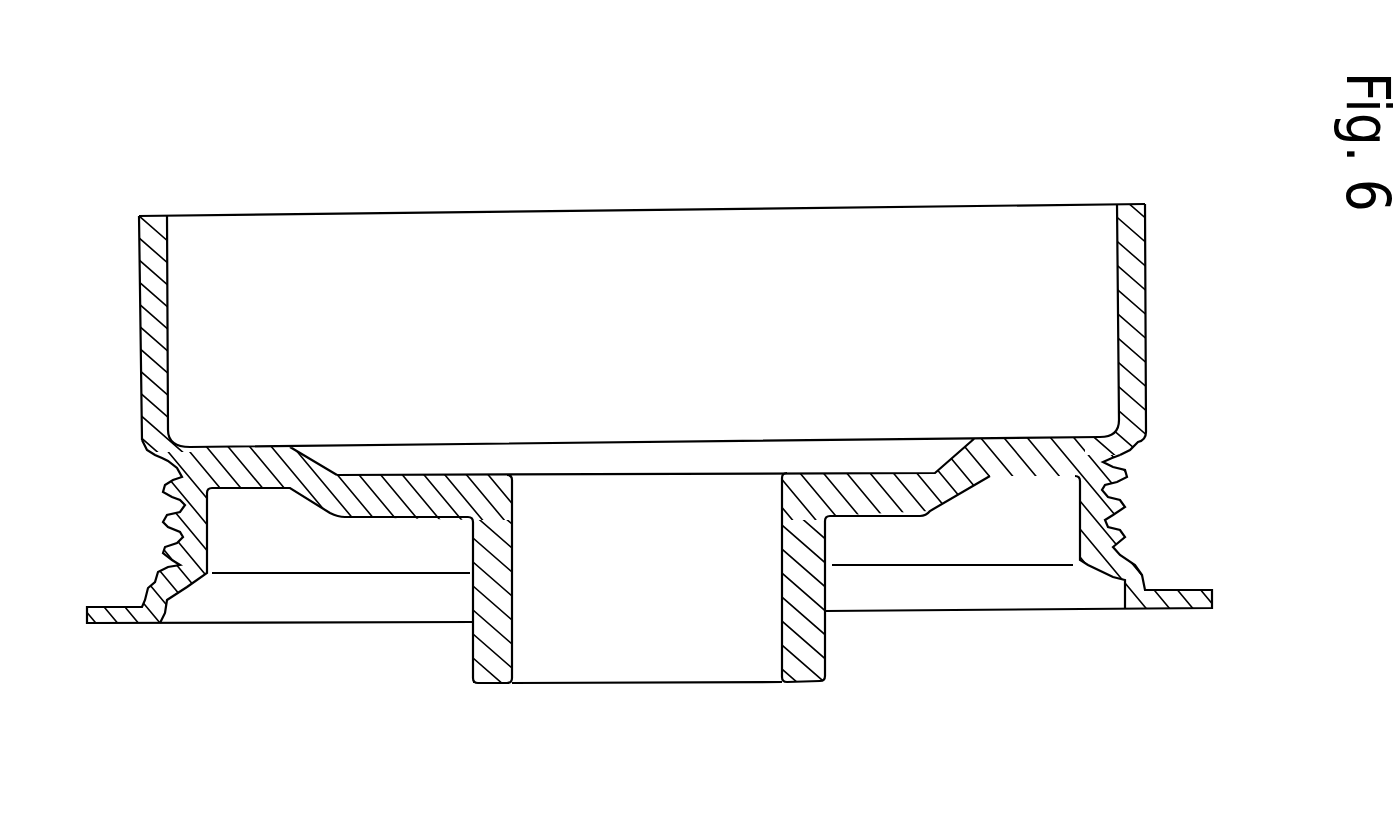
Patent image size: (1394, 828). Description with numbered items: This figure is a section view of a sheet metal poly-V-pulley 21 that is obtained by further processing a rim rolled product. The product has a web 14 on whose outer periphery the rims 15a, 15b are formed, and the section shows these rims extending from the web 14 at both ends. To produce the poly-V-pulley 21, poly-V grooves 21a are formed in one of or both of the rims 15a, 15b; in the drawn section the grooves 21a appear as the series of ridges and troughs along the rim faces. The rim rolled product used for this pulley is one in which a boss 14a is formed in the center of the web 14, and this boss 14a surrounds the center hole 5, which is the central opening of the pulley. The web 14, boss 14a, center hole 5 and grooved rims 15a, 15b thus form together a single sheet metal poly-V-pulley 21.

The sheet metal poly-V-pulley 21 is at (922, 206).
The rim 15a is at (1147, 253).
The rim 15b is at (1083, 537).
The poly-V grooves 21a is at (1128, 498).
The web 14 is at (882, 480).
The boss 14a is at (826, 647).
The center hole 5 is at (634, 493).